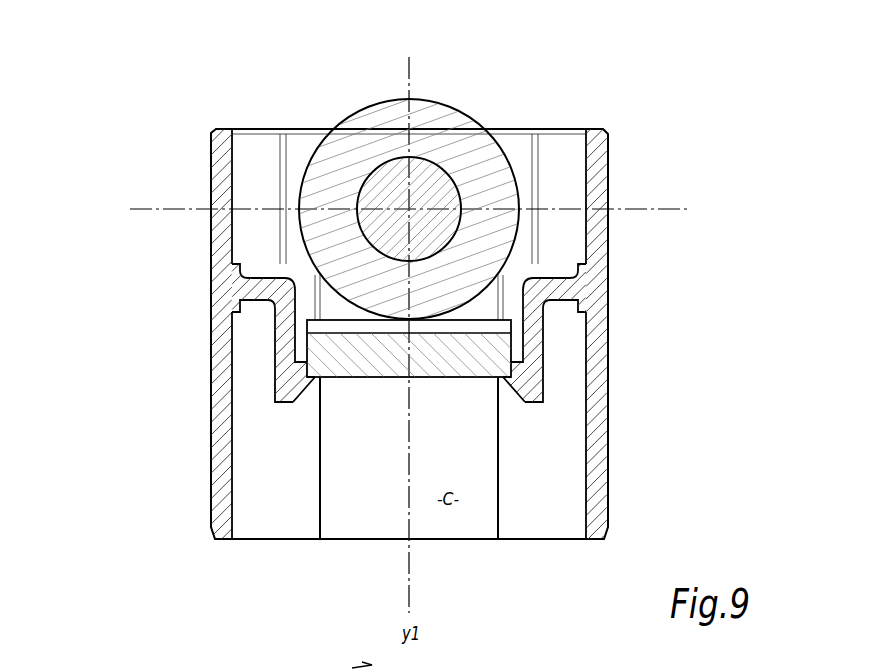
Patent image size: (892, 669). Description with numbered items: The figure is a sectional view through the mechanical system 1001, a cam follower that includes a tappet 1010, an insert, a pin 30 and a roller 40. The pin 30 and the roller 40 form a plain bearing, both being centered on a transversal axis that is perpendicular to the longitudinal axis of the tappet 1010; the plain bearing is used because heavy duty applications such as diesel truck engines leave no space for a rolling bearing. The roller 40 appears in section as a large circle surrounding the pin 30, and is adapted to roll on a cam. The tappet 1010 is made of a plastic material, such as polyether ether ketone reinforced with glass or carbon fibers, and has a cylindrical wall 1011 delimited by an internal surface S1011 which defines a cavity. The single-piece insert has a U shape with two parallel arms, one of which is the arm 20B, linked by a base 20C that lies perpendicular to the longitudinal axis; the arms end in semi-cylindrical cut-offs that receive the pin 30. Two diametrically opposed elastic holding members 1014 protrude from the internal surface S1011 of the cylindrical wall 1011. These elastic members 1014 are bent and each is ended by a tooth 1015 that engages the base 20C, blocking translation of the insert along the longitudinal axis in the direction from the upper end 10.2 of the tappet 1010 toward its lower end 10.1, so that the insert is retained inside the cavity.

The mechanical system 1001 is at (183, 134).
The upper end 10.2 is at (222, 128).
The lower end 10.1 is at (594, 540).
The tappet 1010 is at (596, 158).
The cylindrical wall 1011 is at (221, 445).
The internal surface S1011 is at (240, 479).
The elastic holding member 1014 is at (282, 345).
The tooth 1015 is at (300, 390).
The arm 20B is at (490, 297).
The base 20C is at (455, 348).
The pin 30 is at (397, 184).
The roller 40 is at (428, 122).